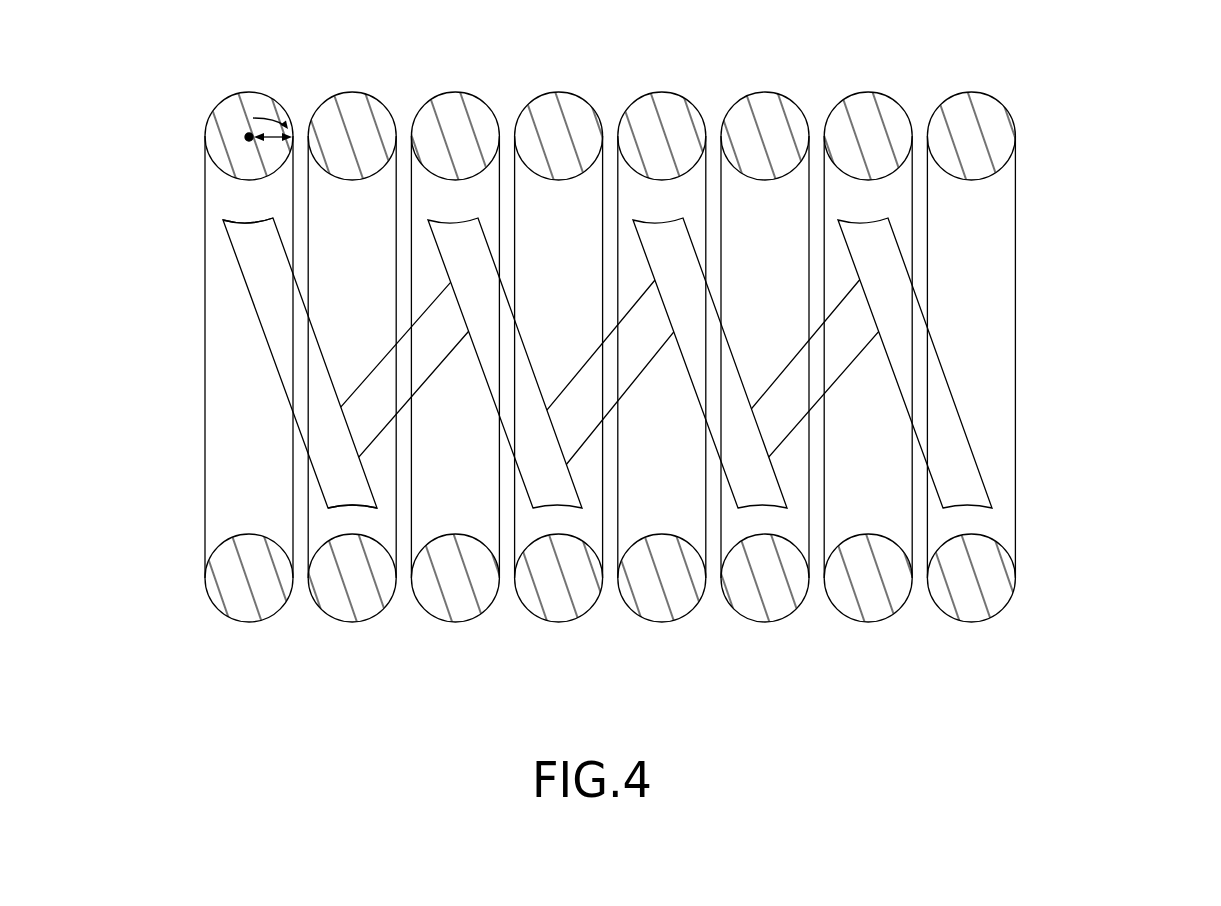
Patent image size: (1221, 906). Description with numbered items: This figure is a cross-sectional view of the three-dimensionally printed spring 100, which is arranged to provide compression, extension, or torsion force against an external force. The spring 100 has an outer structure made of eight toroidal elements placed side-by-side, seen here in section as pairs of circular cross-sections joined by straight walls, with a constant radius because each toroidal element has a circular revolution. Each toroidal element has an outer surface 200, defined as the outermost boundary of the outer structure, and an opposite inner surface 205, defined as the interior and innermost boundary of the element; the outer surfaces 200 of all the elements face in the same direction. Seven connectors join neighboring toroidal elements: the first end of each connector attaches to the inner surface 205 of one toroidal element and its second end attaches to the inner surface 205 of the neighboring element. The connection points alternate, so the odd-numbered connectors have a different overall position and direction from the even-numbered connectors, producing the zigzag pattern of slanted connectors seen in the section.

The 3D-printed spring 100 is at (1118, 110).
The outer surface 200 is at (218, 92).
The inner surface 205 is at (222, 191).